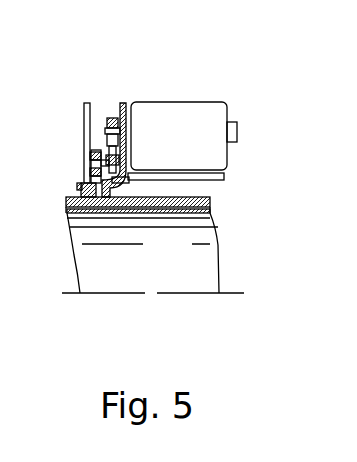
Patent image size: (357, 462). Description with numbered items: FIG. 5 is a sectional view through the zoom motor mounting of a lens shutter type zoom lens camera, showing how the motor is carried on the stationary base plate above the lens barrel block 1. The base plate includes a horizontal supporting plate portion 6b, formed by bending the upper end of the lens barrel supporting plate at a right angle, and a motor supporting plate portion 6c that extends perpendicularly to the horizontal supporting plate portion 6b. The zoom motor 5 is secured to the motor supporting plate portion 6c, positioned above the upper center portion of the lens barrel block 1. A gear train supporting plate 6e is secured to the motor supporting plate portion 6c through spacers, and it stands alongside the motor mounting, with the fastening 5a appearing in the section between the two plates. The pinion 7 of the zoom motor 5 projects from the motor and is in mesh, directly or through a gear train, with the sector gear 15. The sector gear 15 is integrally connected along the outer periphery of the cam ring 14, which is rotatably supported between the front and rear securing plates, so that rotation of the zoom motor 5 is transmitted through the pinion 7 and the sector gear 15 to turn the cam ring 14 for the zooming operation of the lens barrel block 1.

The lens barrel block 1 is at (94, 295).
The zoom motor 5 is at (194, 118).
The motor mounting bolt 5a is at (105, 130).
The horizontal supporting plate portion 6b is at (215, 180).
The motor supporting plate portion 6c is at (124, 102).
The gear train supporting plate 6e is at (82, 108).
The pinion 7 is at (110, 118).
The cam ring 14 is at (165, 207).
The sector gear 15 is at (80, 187).